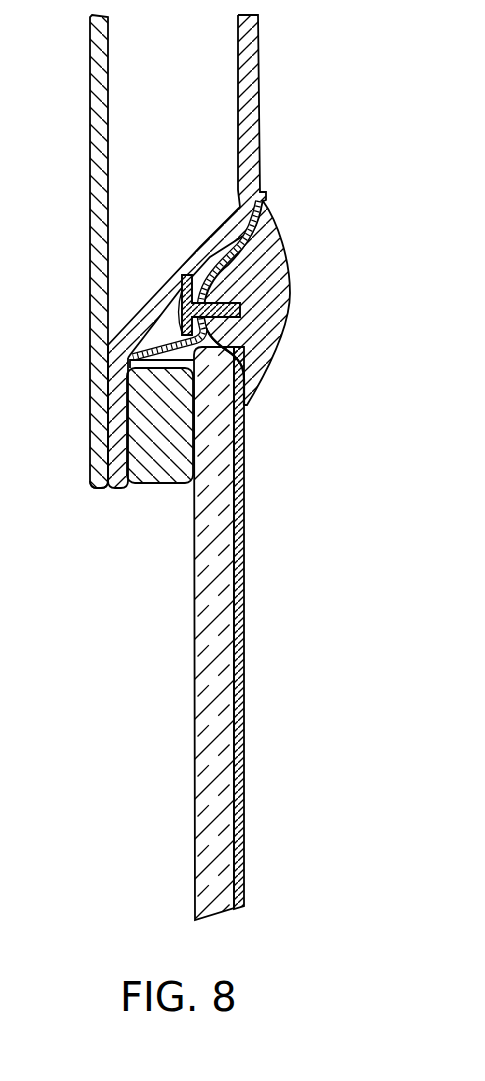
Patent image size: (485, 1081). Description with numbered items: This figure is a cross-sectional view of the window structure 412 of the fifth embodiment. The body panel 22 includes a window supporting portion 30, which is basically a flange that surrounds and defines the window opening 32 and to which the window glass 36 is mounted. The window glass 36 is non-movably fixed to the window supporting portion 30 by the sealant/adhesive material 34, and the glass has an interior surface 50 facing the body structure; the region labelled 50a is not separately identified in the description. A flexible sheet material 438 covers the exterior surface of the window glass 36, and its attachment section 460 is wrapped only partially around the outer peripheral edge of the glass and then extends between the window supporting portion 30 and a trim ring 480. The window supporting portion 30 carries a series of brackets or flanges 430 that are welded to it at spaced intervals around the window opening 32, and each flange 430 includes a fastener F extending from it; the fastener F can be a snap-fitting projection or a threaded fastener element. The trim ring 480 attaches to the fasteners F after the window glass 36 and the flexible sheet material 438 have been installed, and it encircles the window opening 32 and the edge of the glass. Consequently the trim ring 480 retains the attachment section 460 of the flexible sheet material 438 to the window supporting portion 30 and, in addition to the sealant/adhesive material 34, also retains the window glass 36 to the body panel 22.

The body panel 22 is at (236, 79).
The window structure 412 is at (256, 257).
The attachment section 460 is at (246, 232).
The flange 430 is at (154, 332).
The trim ring 480 is at (262, 277).
The fastener F is at (242, 312).
The window supporting portion 30 is at (117, 427).
The window opening 32 is at (92, 493).
The sealant/adhesive material 34 is at (145, 463).
The upper portion of member 50a is at (190, 444).
The interior surface 50 is at (229, 633).
The window glass 36 is at (215, 722).
The flexible sheet material 438 is at (247, 667).